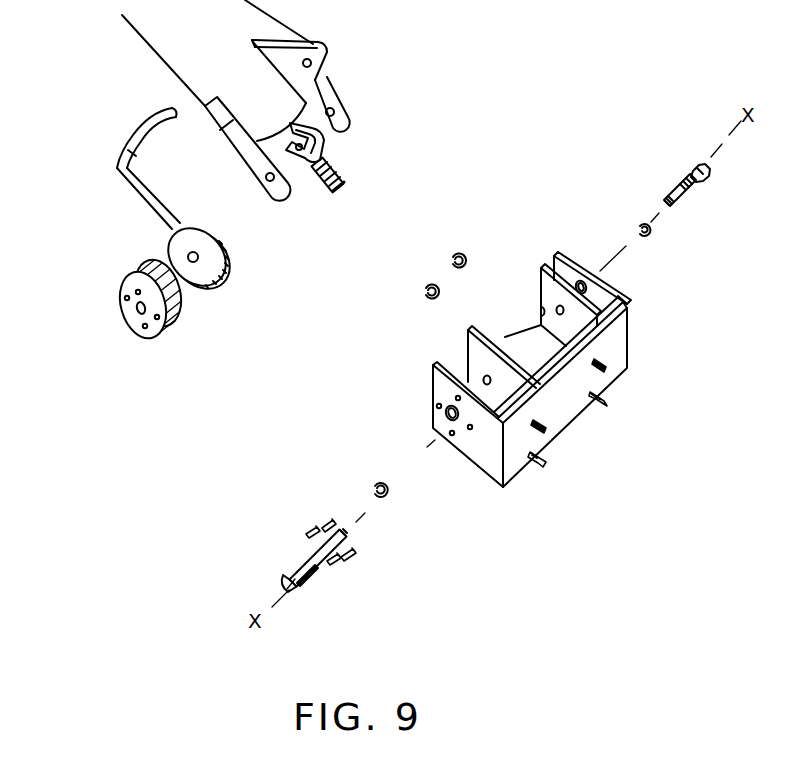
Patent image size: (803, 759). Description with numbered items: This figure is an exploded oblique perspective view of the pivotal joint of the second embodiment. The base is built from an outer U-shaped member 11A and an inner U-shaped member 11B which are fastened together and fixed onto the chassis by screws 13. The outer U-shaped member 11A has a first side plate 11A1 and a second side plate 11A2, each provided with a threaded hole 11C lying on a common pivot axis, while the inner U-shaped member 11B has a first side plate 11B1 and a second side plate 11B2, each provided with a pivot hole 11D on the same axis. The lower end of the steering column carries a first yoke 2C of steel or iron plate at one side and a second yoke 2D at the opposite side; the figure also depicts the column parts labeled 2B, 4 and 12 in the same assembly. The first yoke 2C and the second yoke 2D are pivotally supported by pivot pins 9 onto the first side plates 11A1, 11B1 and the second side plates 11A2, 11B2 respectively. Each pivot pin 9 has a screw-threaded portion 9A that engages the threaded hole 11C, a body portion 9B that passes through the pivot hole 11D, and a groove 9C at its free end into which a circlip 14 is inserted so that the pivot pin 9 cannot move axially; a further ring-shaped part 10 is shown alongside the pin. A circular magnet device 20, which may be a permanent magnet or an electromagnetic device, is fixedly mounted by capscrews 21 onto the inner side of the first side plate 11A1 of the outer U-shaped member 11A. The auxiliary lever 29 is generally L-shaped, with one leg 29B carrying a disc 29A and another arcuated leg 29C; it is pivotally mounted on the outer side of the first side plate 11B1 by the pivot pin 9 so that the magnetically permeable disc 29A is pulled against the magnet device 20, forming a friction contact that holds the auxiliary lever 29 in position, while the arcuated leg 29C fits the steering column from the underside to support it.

The triangular bracket plate 2B is at (324, 55).
The first yoke 2C is at (280, 195).
The second yoke 2D is at (346, 106).
The pivot shaft 4 is at (345, 174).
The fork member 12 is at (322, 132).
The auxiliary lever 29 is at (183, 200).
The disc 29A is at (225, 278).
The leg 29B is at (153, 196).
The arcuated leg 29C is at (140, 129).
The circular magnet device 20 is at (172, 325).
The circlip 14 is at (427, 283).
The outer U-shaped member 11A is at (522, 349).
The first side plate 11A1 is at (433, 377).
The second side plate 11A2 is at (562, 253).
The inner U-shaped member 11B is at (617, 300).
The first side plate 11B1 is at (470, 334).
The second side plate 11B2 is at (544, 266).
The threaded hole 11C is at (457, 420).
The pivot hole 11D is at (488, 378).
The screws 13 is at (607, 406).
The retaining ring 10 is at (650, 233).
The pivot pin 9 is at (502, 388).
The screw-threaded portion 9A is at (698, 182).
The body portion 9B is at (680, 188).
The groove 9C is at (672, 206).
The capscrews 21 is at (353, 562).